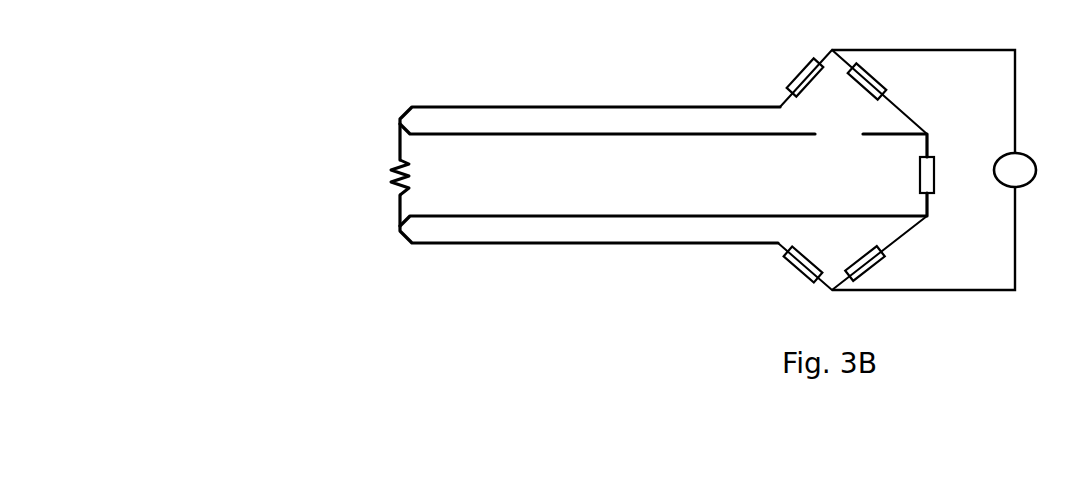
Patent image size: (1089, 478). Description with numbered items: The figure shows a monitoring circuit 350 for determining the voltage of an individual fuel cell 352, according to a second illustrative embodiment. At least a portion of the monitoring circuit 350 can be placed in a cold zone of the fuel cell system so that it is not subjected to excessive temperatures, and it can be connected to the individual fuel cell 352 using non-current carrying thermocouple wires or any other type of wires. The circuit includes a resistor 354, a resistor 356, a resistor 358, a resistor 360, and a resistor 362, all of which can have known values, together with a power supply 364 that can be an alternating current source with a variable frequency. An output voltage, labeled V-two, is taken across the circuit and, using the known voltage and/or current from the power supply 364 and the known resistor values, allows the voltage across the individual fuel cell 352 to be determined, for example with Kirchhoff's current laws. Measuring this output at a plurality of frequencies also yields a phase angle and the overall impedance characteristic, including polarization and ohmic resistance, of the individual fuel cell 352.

The monitoring circuit 350 is at (428, 340).
The individual fuel cell 352 is at (393, 172).
The resistor 354 is at (795, 72).
The resistor 356 is at (887, 85).
The resistor 358 is at (917, 163).
The resistor 360 is at (887, 258).
The resistor 362 is at (793, 270).
The power supply 364 is at (1040, 180).